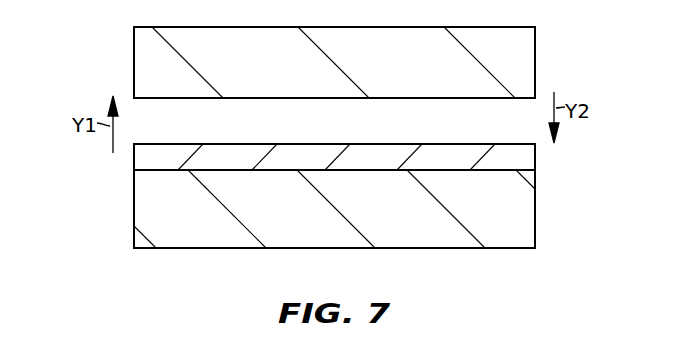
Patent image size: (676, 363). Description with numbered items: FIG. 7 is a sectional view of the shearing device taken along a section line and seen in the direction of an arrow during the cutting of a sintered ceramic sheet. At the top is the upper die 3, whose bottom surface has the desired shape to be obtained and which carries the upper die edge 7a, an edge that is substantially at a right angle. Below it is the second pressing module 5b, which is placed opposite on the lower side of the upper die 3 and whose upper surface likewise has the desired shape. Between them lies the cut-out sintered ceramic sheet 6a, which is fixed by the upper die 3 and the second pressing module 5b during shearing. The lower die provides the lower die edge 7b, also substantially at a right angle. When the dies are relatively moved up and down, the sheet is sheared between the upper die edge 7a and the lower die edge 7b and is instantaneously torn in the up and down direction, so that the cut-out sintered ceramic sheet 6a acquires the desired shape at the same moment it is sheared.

The upper die 3 is at (512, 66).
The upper die edge 7a is at (162, 98).
The cut-out sintered ceramic sheet 6a is at (523, 155).
The second pressing module 5b is at (525, 208).
The lower die edge 7b is at (166, 171).